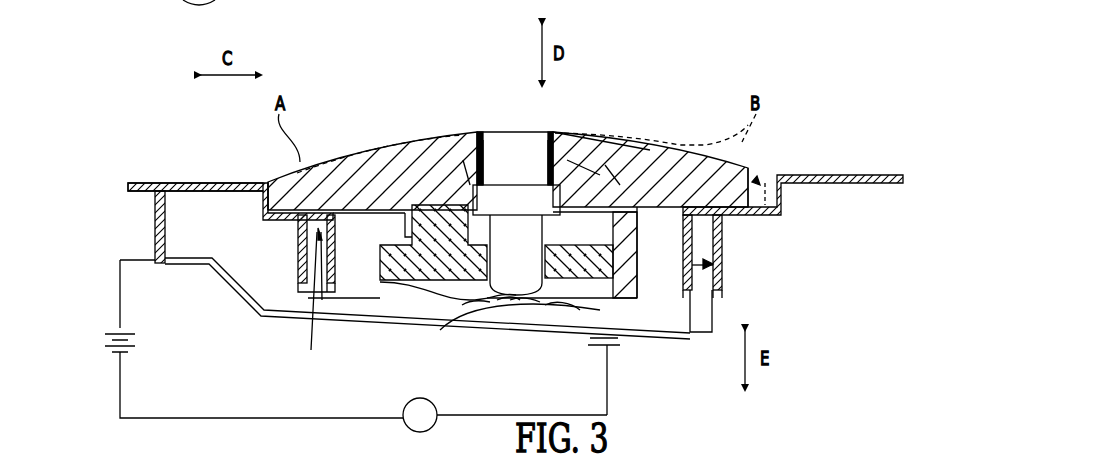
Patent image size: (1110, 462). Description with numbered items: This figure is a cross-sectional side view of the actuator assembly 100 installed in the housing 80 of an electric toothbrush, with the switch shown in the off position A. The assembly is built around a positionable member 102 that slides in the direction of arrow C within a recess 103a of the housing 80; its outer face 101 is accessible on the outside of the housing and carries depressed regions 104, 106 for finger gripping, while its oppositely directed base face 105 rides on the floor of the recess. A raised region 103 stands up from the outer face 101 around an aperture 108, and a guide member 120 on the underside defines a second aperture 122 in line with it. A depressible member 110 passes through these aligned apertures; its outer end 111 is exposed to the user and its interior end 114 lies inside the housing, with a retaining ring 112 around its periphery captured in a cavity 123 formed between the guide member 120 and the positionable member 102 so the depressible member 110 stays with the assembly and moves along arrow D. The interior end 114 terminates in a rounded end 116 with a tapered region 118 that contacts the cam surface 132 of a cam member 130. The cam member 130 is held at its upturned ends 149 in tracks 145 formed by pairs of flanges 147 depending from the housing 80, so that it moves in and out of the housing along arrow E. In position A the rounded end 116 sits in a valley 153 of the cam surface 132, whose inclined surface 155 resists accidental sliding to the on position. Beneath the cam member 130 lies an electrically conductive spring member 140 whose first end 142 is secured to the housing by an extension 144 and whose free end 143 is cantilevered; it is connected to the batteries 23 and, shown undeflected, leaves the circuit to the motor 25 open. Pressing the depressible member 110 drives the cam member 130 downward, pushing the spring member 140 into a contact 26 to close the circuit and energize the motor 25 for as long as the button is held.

The batteries 23 is at (125, 347).
The motor 25 is at (403, 412).
The contact 26 is at (610, 350).
The housing 80 is at (176, 183).
The actuator assembly 100 is at (688, 50).
The outer face 101 is at (266, 184).
The positionable member 102 is at (737, 162).
The raised region 103 is at (570, 160).
The recess 103a is at (762, 176).
The depressed region 104 is at (400, 157).
The base face 105 is at (628, 217).
The depressed region 106 is at (600, 172).
The aperture 108 is at (463, 160).
The depressible member 110 is at (488, 133).
The outer end 111 is at (517, 147).
The retaining ring 112 is at (567, 160).
The interior end 114 is at (445, 300).
The rounded end 116 is at (545, 305).
The tapered region 118 is at (510, 300).
The guide member 120 is at (683, 266).
The aperture 122 is at (470, 292).
The cavity 123 is at (605, 185).
The cam member 130 is at (306, 296).
The cam surface 132 is at (410, 298).
The spring member 140 is at (232, 293).
The first end 142 is at (156, 244).
The free end 143 is at (597, 346).
The extension 144 is at (160, 183).
The tracks 145 is at (311, 300).
The flanges 147 is at (347, 250).
The upturned ends 149 is at (320, 300).
The valley 153 is at (462, 305).
The inclined surface 155 is at (497, 300).